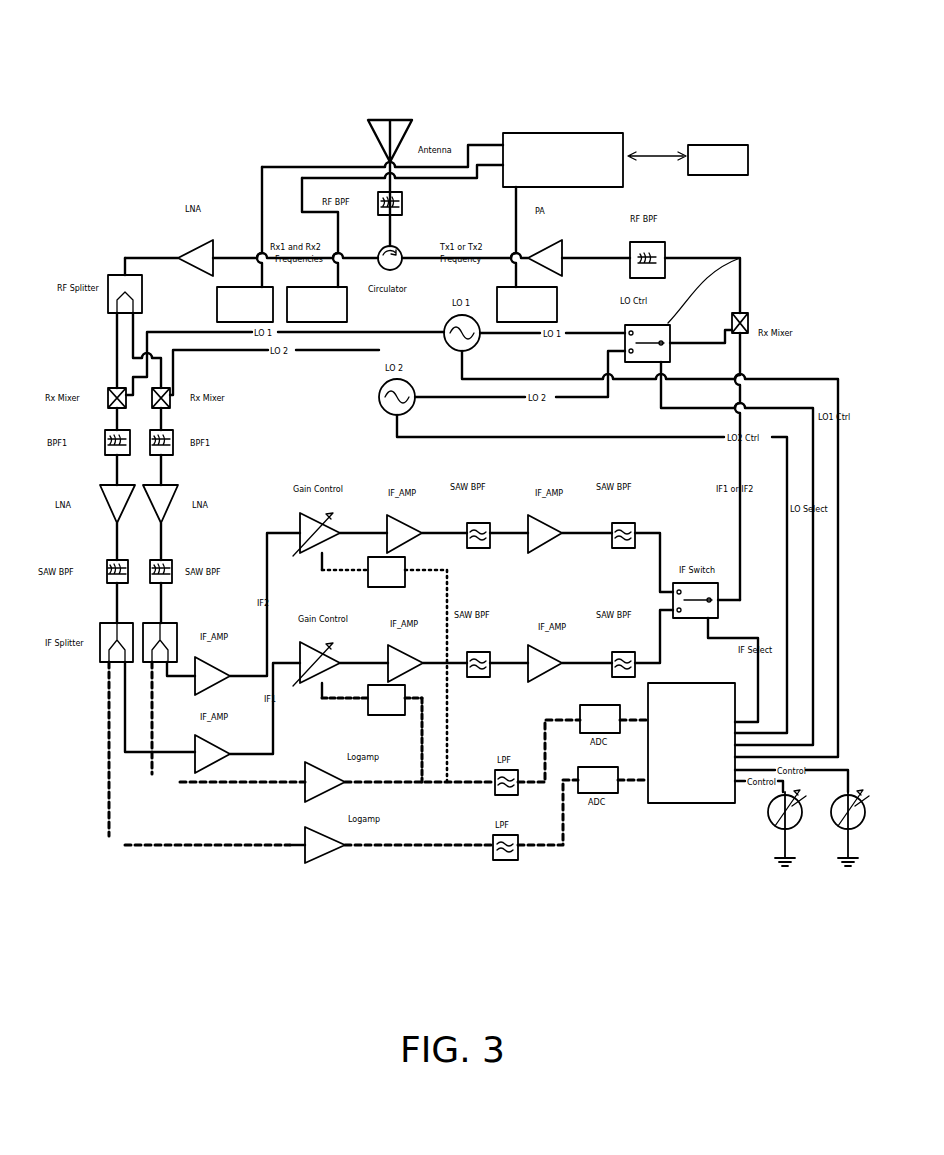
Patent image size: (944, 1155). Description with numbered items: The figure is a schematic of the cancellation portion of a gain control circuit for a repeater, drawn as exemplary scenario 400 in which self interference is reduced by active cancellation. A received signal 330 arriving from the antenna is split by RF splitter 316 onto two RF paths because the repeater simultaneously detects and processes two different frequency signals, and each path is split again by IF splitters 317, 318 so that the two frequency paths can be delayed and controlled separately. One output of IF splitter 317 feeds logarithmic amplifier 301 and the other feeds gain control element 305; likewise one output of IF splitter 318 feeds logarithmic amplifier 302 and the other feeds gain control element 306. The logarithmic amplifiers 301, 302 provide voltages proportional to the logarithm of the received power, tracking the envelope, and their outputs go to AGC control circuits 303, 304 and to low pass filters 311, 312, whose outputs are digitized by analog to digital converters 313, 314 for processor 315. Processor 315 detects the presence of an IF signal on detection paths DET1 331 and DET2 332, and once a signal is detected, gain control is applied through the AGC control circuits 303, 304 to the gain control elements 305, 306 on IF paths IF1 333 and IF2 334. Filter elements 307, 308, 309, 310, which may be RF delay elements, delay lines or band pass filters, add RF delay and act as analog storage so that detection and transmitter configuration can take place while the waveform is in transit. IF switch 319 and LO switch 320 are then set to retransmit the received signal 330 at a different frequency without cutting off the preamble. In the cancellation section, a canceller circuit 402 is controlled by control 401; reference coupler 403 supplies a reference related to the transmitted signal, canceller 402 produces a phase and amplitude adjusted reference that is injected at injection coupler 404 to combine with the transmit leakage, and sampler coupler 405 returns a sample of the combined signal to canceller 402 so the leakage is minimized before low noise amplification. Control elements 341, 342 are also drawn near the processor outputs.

The logarithmic amplifier 301 is at (333, 863).
The logarithmic amplifier 302 is at (305, 792).
The AGC control circuit 303 is at (403, 715).
The AGC control circuit 304 is at (379, 557).
The gain control element 305 is at (305, 685).
The gain control element 306 is at (300, 515).
The filter element 307 is at (487, 652).
The filter element 308 is at (470, 522).
The filter element 309 is at (618, 652).
The filter element 310 is at (616, 522).
The low pass filter 311 is at (507, 862).
The low pass filter 312 is at (500, 797).
The analog to digital converter 313 is at (612, 795).
The analog to digital converter 314 is at (620, 735).
The processor 315 is at (731, 803).
The RF splitter 316 is at (113, 275).
The IF splitter 317 is at (100, 628).
The IF splitter 318 is at (177, 630).
The IF switch 319 is at (720, 606).
The LO switch 320 is at (740, 258).
The received signal 330 is at (425, 85).
The detection path DET1 331 is at (135, 847).
The detection path DET2 332 is at (200, 785).
The IF path IF1 333 is at (428, 788).
The IF path IF2 334 is at (447, 680).
The variable attenuator 341 is at (775, 828).
The variable attenuator 342 is at (838, 828).
The scenario 400 is at (792, 64).
The control 401 is at (749, 150).
The canceller circuit 402 is at (623, 183).
The reference coupler 403 is at (557, 305).
The injection coupler 404 is at (347, 310).
The sampler coupler 405 is at (217, 306).